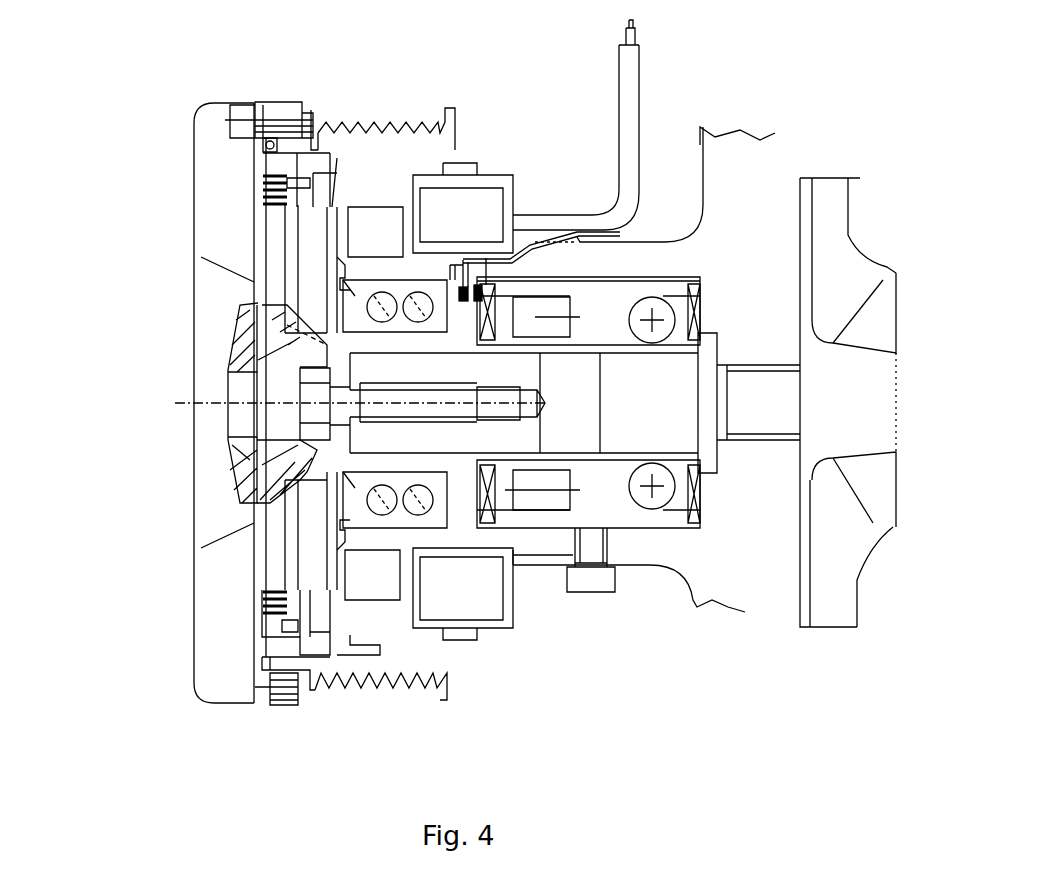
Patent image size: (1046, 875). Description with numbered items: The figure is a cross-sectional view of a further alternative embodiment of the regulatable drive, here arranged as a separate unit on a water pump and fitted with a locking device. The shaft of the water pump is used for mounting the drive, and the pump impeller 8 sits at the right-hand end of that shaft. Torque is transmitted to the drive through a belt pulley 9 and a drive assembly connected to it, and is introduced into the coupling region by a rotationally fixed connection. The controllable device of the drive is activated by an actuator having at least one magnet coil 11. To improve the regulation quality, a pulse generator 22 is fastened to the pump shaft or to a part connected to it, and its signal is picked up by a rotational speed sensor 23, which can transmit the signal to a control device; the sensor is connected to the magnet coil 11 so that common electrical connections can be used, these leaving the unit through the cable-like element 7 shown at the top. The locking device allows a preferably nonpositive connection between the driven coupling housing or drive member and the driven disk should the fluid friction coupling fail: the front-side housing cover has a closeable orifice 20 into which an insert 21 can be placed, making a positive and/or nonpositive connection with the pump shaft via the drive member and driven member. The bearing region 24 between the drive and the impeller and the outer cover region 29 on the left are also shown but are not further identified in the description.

The cable 7 is at (633, 52).
The pump impeller 8 is at (842, 253).
The belt pulley 9 is at (380, 167).
The magnet coil 11 is at (426, 205).
The closeable orifice 20 is at (260, 350).
The insert 21 is at (262, 455).
The pulse generator 22 is at (462, 295).
The rotational speed sensor 23 is at (470, 300).
The bearing housing 24 is at (608, 507).
The housing cover 29 is at (203, 155).